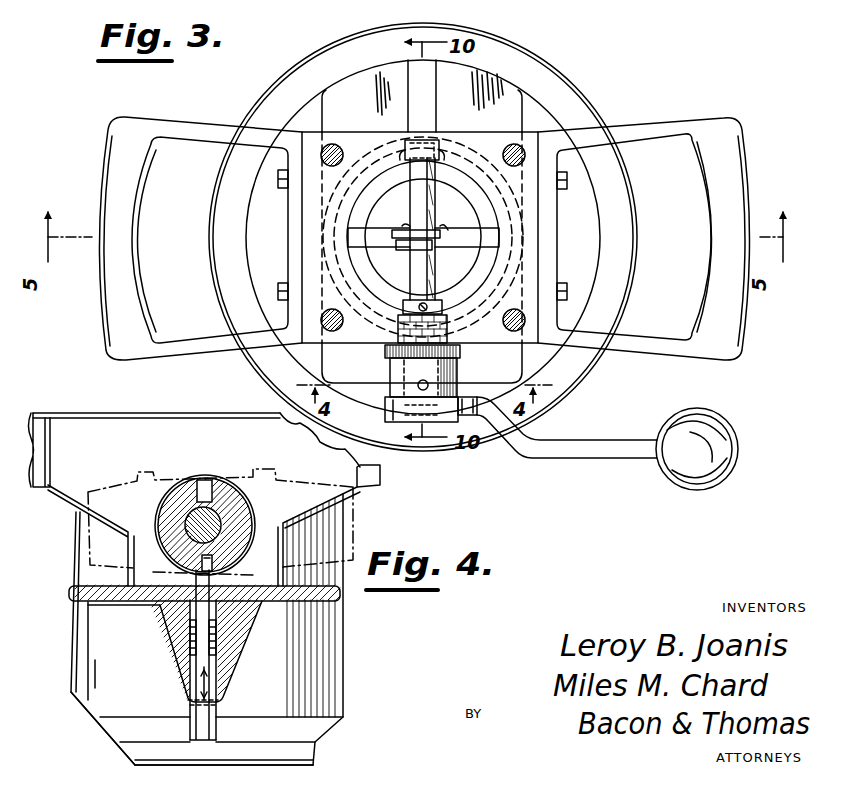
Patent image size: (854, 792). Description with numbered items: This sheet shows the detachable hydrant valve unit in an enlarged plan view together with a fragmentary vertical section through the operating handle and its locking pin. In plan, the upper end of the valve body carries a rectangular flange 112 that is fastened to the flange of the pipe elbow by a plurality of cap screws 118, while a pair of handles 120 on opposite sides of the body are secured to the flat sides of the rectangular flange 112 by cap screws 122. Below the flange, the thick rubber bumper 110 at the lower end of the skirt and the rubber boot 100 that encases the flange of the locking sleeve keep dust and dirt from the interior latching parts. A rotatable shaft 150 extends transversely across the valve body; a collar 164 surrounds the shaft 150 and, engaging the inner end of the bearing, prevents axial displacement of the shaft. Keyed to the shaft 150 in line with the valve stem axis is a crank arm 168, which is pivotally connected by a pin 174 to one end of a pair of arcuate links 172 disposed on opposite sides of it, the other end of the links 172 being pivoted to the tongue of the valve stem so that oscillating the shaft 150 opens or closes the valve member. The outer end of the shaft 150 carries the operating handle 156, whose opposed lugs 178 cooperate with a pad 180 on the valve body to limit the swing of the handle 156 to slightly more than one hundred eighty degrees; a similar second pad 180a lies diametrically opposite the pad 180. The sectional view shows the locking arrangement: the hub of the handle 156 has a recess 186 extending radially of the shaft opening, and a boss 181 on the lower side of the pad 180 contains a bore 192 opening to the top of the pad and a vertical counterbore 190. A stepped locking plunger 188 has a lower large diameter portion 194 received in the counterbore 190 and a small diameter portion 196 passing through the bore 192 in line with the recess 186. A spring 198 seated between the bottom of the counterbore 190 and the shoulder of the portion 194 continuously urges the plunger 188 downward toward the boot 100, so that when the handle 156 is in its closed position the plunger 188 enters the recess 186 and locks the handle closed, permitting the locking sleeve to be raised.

In FIG. 3, the rubber boot 100 is at (546, 120).
In FIG. 4, the rubber boot 100 is at (316, 754).
In FIG. 3, the rubber bumper 110 is at (519, 62).
In FIG. 3, the rectangular flange 112 is at (455, 348).
In FIG. 4, the rectangular flange 112 is at (68, 419).
In FIG. 3, the cap screws 118 is at (337, 146).
In FIG. 3, the handles 120 is at (106, 150).
In FIG. 3, the cap screws 122 is at (283, 292).
In FIG. 3, the rotatable shaft 150 is at (414, 288).
In FIG. 4, the rotatable shaft 150 is at (177, 516).
In FIG. 3, the operating handle 156 is at (592, 444).
In FIG. 4, the operating handle 156 is at (101, 546).
In FIG. 3, the collar 164 is at (427, 279).
In FIG. 3, the crank arm 168 is at (434, 247).
In FIG. 3, the arcuate links 172 is at (397, 240).
In FIG. 3, the pin 174 is at (424, 225).
In FIG. 3, the lugs 178 is at (480, 420).
In FIG. 4, the lugs 178 is at (140, 480).
In FIG. 3, the pad 180 is at (512, 370).
In FIG. 4, the pad 180 is at (308, 598).
In FIG. 3, the second pad 180a is at (378, 88).
In FIG. 4, the boss 181 is at (171, 637).
In FIG. 3, the recess 186 is at (392, 383).
In FIG. 4, the recess 186 is at (205, 478).
In FIG. 4, the locking plunger 188 is at (188, 728).
In FIG. 4, the counterbore 190 is at (190, 690).
In FIG. 4, the bore 192 is at (190, 641).
In FIG. 4, the large diameter portion 194 is at (216, 712).
In FIG. 4, the small diameter portion 196 is at (216, 638).
In FIG. 4, the spring 198 is at (216, 653).